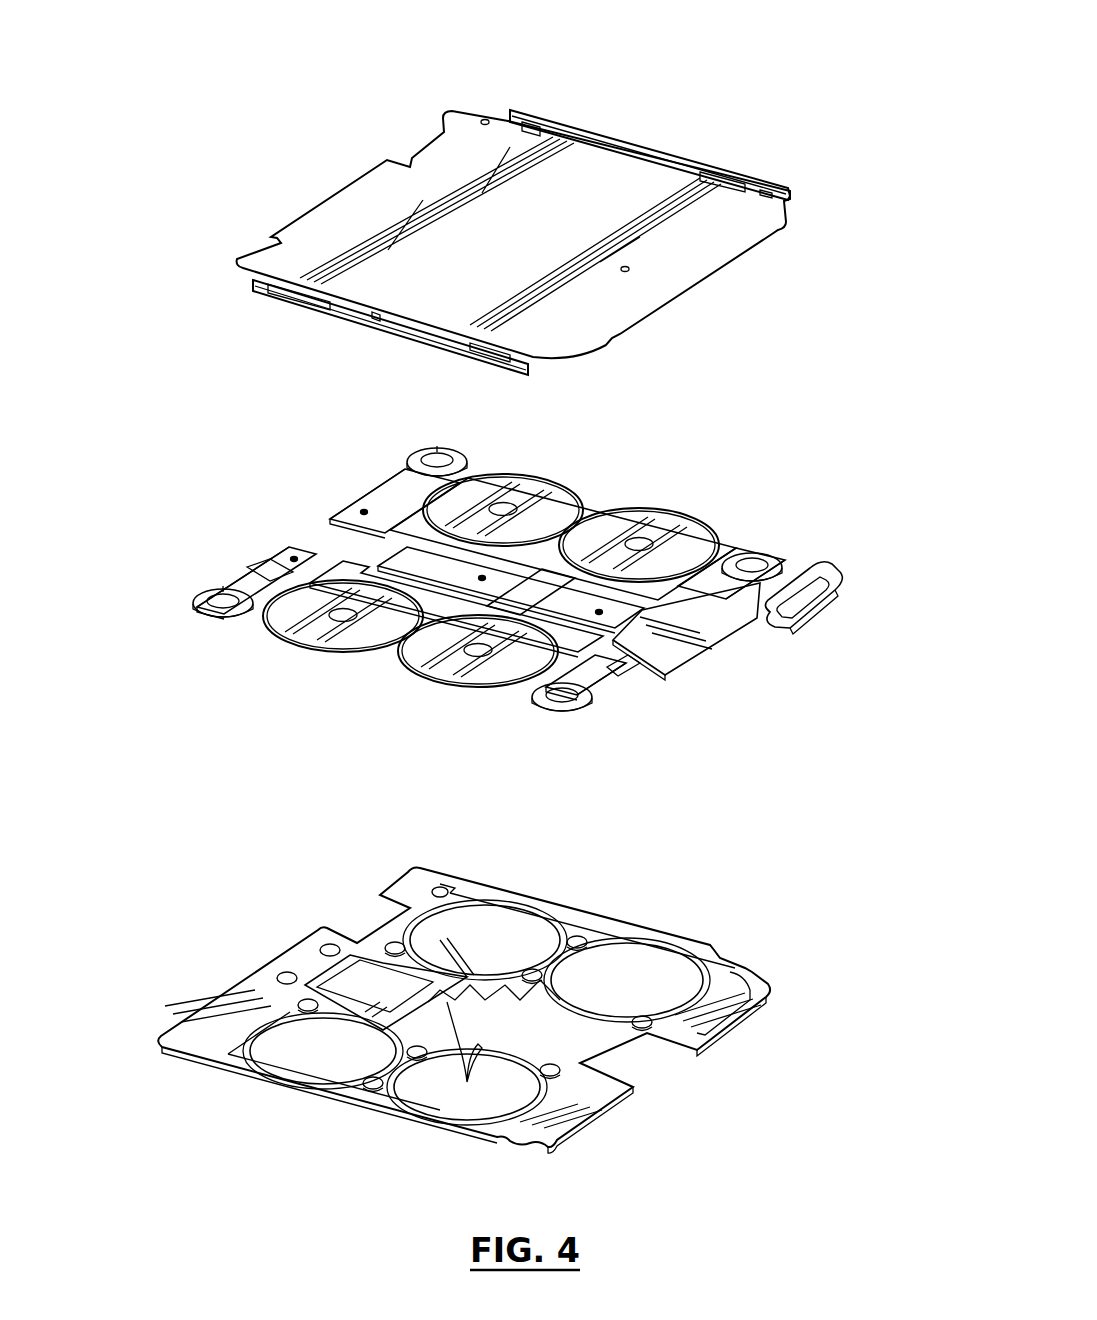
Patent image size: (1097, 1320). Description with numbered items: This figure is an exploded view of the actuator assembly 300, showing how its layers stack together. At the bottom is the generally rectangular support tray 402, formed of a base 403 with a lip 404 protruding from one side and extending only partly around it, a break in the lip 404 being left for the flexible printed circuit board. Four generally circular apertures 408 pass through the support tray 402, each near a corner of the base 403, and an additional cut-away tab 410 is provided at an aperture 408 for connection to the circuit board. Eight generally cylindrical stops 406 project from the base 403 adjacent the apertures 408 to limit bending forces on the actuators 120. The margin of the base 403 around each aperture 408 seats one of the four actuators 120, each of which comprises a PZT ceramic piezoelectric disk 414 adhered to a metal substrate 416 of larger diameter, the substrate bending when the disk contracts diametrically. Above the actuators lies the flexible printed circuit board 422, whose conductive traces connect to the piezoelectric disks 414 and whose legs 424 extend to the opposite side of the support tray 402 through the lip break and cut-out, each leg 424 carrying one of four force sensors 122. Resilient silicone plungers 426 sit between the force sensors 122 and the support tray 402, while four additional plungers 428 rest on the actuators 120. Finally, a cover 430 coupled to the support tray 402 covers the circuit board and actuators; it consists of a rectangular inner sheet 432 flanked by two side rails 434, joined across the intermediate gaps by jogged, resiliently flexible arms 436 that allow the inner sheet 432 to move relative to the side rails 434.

The actuator assembly 300 is at (762, 57).
The cover 430 is at (640, 138).
The resiliently flexible arms 436 is at (705, 185).
The side rails 434 is at (770, 190).
The inner sheet 432 is at (700, 262).
The resilient plungers 426 is at (437, 452).
The force sensors 122 is at (430, 452).
The legs 424 is at (345, 505).
The additional plungers 428 is at (553, 494).
The metal substrate 416 is at (650, 515).
The piezoelectric disk 414 is at (685, 538).
The flexible printed circuit board 422 is at (395, 630).
The actuators 120 is at (770, 560).
The support tray 402 is at (690, 950).
The lip 404 is at (540, 905).
The base 403 is at (600, 1050).
The apertures 408 is at (490, 908).
The stops 406 is at (393, 948).
The cut-away tab 410 is at (457, 1057).